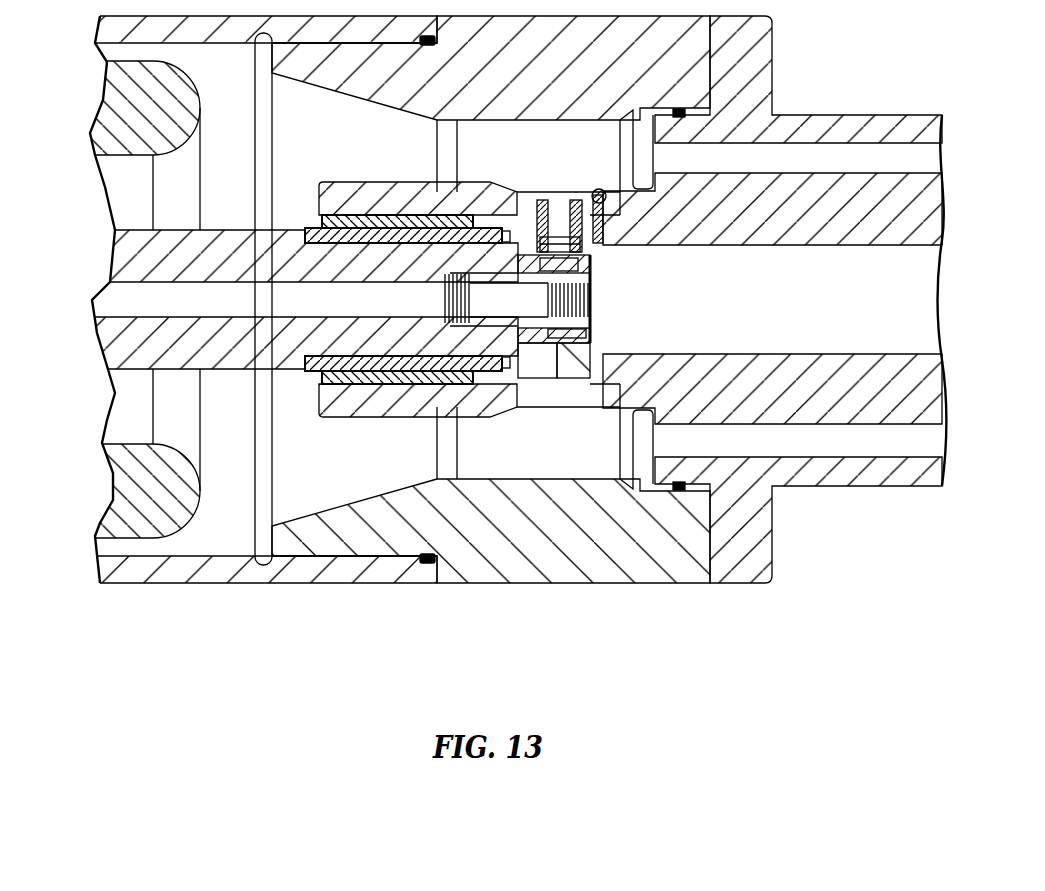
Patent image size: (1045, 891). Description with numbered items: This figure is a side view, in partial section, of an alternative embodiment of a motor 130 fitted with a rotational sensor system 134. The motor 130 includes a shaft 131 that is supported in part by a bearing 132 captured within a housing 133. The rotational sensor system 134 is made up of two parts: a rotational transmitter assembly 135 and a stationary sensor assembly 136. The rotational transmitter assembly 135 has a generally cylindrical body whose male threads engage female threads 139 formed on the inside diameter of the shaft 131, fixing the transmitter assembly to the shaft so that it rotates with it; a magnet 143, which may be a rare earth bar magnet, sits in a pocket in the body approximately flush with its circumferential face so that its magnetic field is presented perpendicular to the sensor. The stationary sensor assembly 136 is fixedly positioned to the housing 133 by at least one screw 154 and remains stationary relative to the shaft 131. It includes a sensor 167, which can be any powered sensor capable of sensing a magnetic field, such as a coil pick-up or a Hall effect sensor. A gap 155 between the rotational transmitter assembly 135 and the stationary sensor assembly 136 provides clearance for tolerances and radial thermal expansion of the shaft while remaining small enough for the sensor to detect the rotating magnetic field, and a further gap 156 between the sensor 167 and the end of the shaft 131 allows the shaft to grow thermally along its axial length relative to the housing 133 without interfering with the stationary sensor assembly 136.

The motor 130 is at (228, 626).
The shaft 131 is at (120, 262).
The bearing 132 is at (372, 216).
The housing 133 is at (428, 198).
The rotational sensor system 134 is at (627, 327).
The rotational transmitter assembly 135 is at (528, 362).
The stationary sensor assembly 136 is at (580, 205).
The female threads 139 is at (428, 333).
The magnet 143 is at (593, 272).
The screw 154 is at (607, 200).
The gap 155 is at (593, 248).
The gap 156 is at (533, 228).
The sensor 167 is at (556, 236).